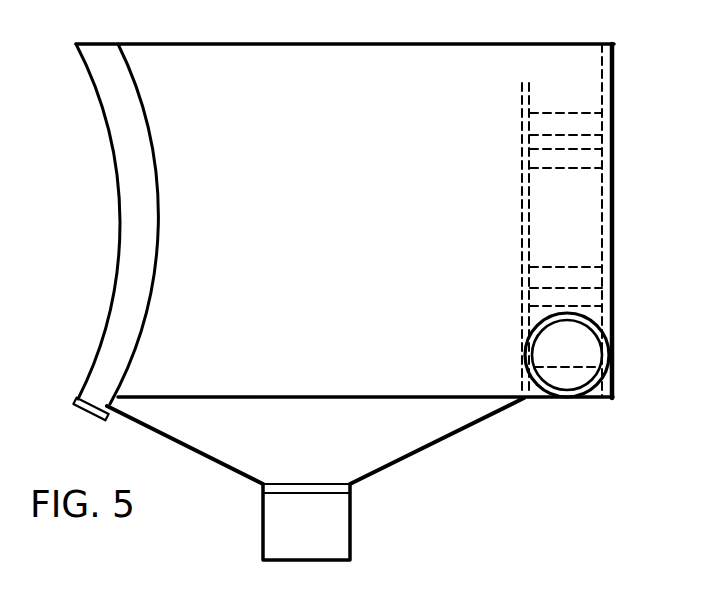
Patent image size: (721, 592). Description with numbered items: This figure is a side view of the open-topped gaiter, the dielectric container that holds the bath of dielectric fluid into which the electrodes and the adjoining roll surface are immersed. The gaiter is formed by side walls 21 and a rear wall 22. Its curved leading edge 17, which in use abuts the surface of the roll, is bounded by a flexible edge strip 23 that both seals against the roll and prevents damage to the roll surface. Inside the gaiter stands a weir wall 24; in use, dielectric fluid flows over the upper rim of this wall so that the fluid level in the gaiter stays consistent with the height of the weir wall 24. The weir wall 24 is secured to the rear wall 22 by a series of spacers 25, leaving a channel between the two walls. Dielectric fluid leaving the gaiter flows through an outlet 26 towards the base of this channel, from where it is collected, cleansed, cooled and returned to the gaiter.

The leading edge 17 is at (95, 382).
The side walls 21 is at (243, 53).
The rear wall 22 is at (613, 192).
The flexible edge strip 23 is at (127, 181).
The weir wall 24 is at (522, 151).
The spacers 25 is at (587, 128).
The outlet 26 is at (612, 388).